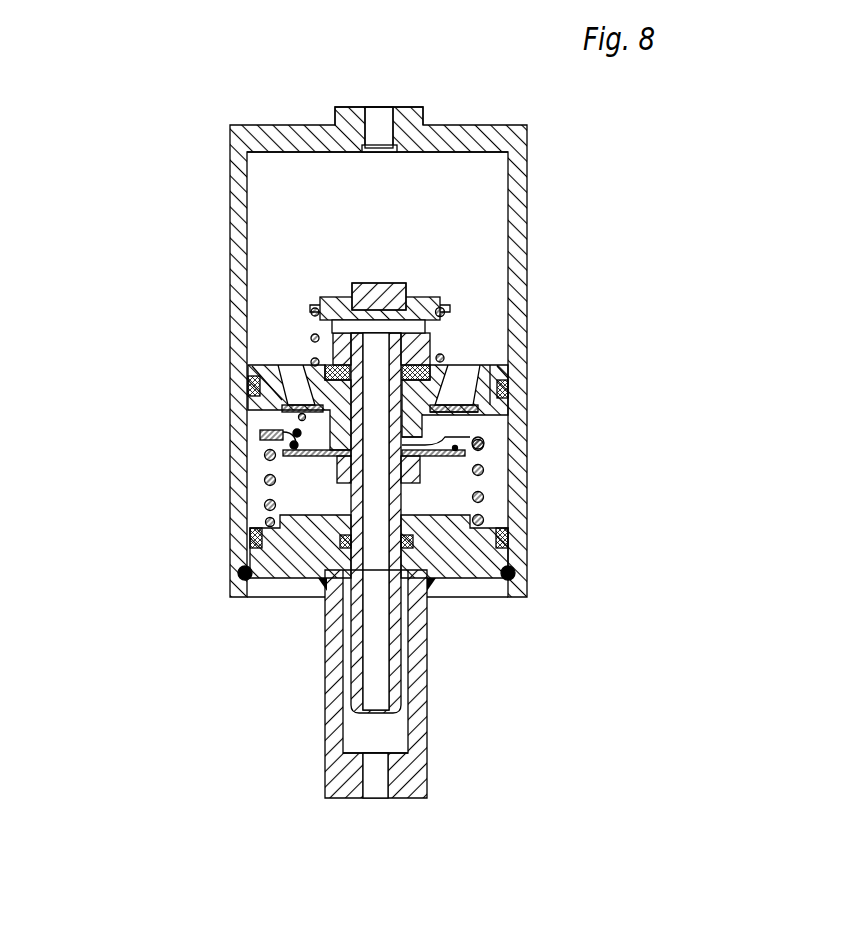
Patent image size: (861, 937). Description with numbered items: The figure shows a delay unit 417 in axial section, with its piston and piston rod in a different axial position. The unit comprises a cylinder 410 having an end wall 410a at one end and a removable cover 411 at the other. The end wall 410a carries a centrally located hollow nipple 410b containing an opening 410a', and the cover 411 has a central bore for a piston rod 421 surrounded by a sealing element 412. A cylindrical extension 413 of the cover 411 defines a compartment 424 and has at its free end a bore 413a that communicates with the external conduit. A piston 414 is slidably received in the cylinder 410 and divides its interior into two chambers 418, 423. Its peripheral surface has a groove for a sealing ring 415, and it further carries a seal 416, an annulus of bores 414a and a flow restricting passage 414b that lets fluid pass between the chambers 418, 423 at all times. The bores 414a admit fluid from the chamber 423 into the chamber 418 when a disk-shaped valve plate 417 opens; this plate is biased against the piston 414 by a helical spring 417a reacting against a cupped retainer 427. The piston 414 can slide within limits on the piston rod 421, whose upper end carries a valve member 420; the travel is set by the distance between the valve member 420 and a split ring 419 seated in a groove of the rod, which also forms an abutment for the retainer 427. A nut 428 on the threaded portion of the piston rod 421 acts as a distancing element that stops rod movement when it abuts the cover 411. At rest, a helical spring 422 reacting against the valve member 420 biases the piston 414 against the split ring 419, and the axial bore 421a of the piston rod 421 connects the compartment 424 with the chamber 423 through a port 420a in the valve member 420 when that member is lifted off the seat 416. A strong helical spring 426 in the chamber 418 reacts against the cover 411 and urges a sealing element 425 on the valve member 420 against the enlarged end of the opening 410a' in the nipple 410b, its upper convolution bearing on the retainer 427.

The cylinder 410 is at (527, 225).
The end wall 410a is at (425, 110).
The opening 410a' is at (374, 104).
The hollow nipple 410b is at (405, 108).
The cover 411 is at (287, 570).
The sealing element 412 is at (412, 545).
The cylindrical extension 413 is at (412, 713).
The bore 413a is at (372, 787).
The piston 414 is at (247, 370).
The bores 414a is at (290, 367).
The flow restricting passage 414b is at (510, 375).
The sealing ring 415 is at (248, 388).
The seal 416 is at (323, 368).
The delay unit 417 is at (495, 405).
The helical spring 417a is at (270, 440).
The chamber 418 is at (256, 412).
The split ring 419 is at (410, 441).
The valve member 420 is at (430, 338).
The port 420a is at (335, 352).
The piston rod 421 is at (395, 633).
The axial bore 421a is at (376, 670).
The helical spring 422 is at (444, 313).
The chamber 423 is at (400, 203).
The compartment 424 is at (390, 744).
The sealing element 425 is at (373, 285).
The helical spring 426 is at (486, 497).
The cupped retainer 427 is at (492, 437).
The nut 428 is at (440, 478).